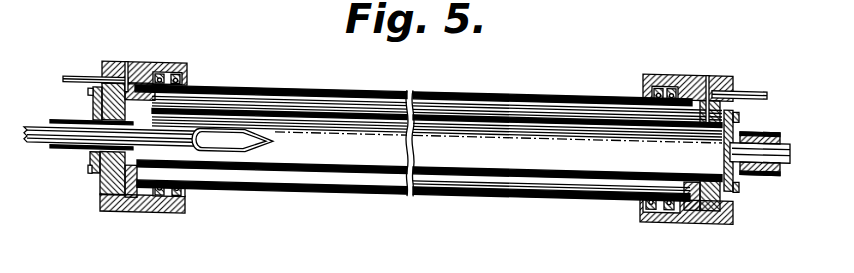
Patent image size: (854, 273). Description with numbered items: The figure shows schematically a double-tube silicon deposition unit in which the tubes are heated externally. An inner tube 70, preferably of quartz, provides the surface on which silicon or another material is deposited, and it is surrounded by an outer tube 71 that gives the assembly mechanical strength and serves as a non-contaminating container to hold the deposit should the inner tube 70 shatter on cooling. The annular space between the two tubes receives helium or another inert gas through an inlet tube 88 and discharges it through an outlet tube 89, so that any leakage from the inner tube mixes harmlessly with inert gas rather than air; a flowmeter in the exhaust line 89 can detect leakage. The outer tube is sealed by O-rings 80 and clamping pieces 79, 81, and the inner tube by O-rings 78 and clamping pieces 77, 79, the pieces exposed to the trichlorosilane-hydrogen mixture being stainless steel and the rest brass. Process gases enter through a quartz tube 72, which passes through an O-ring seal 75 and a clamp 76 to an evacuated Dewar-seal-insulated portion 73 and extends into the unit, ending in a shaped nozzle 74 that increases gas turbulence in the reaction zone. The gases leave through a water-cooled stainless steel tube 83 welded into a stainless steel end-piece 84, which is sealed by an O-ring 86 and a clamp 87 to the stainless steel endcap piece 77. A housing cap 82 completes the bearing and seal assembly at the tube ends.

The inner tube 70 is at (518, 163).
The outer tube 71 is at (353, 184).
The quartz tube 72 is at (33, 142).
The evacuated Dewar-seal-insulated portion 73 is at (62, 116).
The shaped nozzle 74 is at (270, 132).
The O-ring seal 75 is at (100, 112).
The clamp 76 is at (92, 160).
The clamping piece 77 is at (100, 190).
The O-ring 78 is at (112, 194).
The clamping piece 79 is at (142, 196).
The O-ring 80 is at (173, 73).
The clamping piece 81 is at (173, 186).
The housing cap 82 is at (118, 60).
The water cooled stainless steel tube 83 is at (782, 149).
The stainless steel end-piece 84 is at (753, 110).
The O-ring 86 is at (729, 180).
The clamp 87 is at (739, 172).
The inlet tube 88 is at (753, 74).
The outlet tube 89 is at (78, 70).